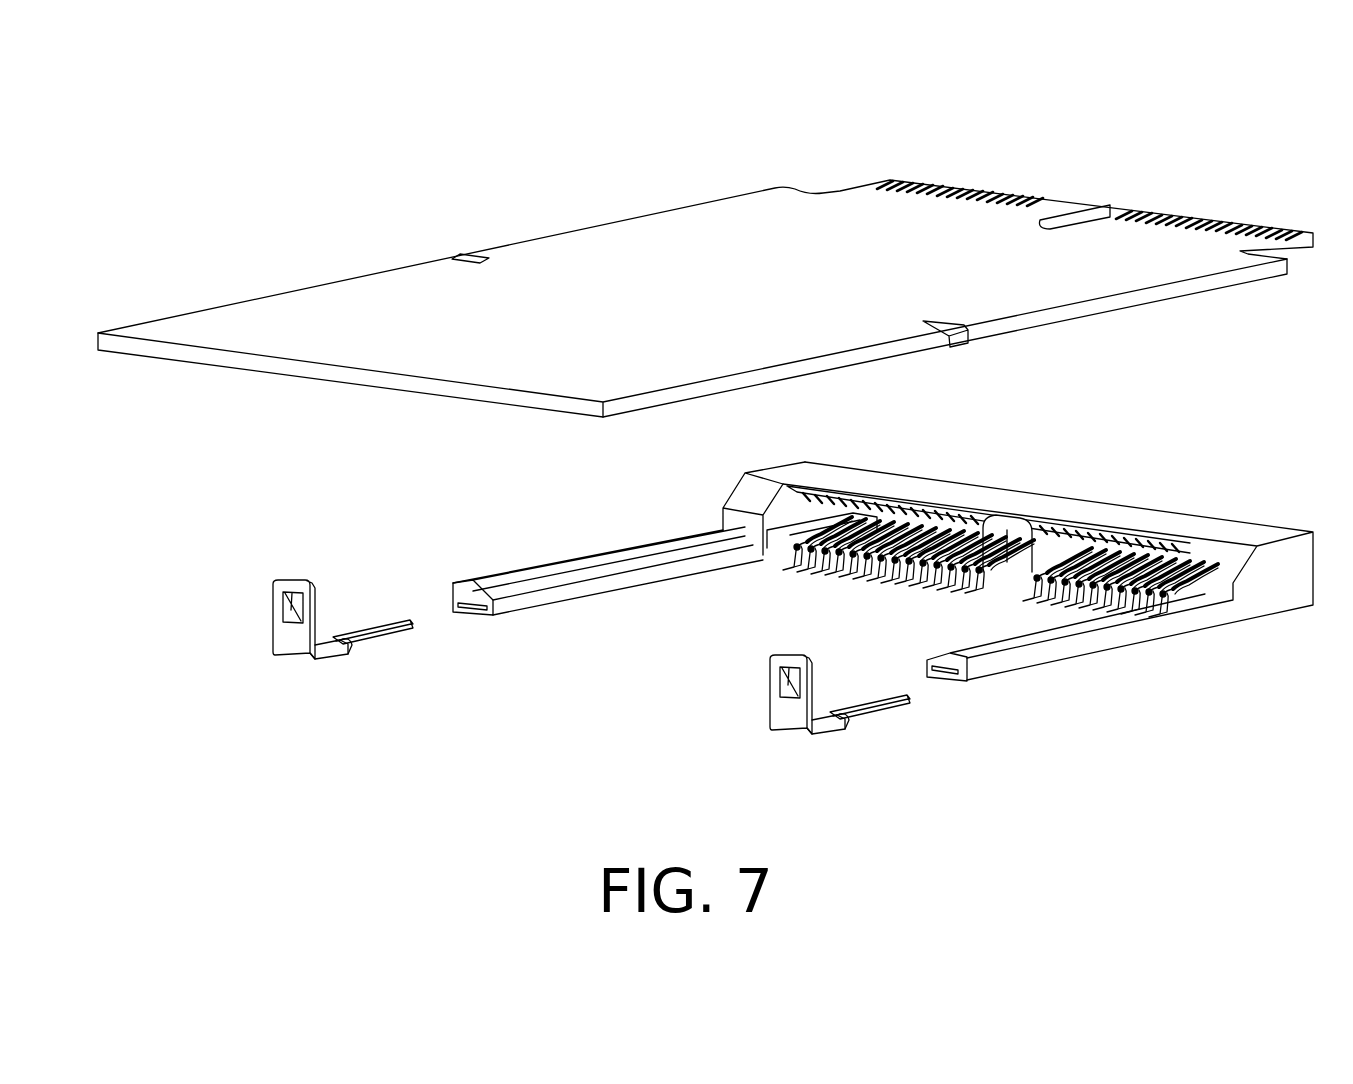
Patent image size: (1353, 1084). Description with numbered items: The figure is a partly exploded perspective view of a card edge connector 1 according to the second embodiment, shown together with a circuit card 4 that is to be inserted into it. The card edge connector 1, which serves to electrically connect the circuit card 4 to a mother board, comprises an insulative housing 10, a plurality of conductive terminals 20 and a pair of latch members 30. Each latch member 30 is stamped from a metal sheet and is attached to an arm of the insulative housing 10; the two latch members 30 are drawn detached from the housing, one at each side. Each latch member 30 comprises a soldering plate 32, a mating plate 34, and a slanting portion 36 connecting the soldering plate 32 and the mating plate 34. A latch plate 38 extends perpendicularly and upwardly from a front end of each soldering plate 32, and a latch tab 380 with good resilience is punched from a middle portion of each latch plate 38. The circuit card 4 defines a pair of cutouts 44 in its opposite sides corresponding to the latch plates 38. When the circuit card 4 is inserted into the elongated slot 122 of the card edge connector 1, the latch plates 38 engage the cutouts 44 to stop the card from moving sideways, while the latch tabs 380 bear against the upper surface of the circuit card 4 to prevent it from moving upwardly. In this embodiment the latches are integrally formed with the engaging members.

The card edge connector 1 is at (1340, 660).
The circuit card 4 is at (638, 198).
The cutouts 44 is at (466, 254).
The insulative housing 10 is at (702, 508).
The elongated slot 122 is at (1170, 555).
The conductive terminals 20 is at (787, 577).
The latch members 30 is at (364, 665).
The soldering plate 32 is at (327, 652).
The mating plate 34 is at (378, 628).
The slanting portion 36 is at (350, 650).
The latch plate 38 is at (298, 642).
The latch tab 380 is at (288, 617).